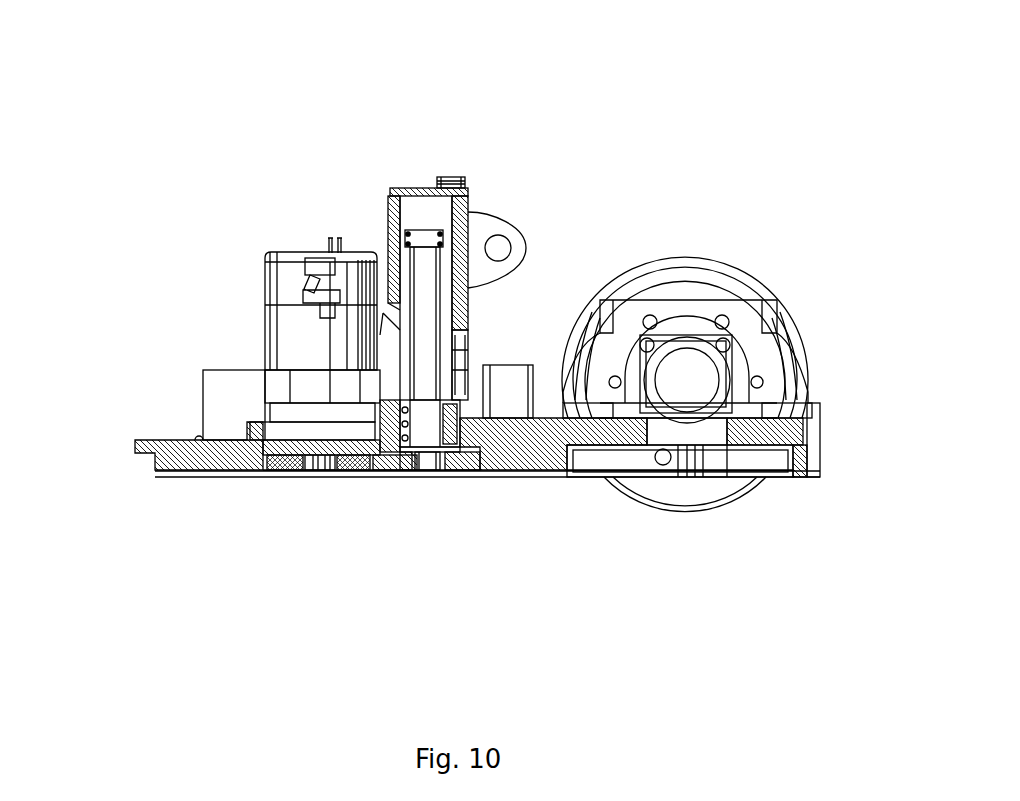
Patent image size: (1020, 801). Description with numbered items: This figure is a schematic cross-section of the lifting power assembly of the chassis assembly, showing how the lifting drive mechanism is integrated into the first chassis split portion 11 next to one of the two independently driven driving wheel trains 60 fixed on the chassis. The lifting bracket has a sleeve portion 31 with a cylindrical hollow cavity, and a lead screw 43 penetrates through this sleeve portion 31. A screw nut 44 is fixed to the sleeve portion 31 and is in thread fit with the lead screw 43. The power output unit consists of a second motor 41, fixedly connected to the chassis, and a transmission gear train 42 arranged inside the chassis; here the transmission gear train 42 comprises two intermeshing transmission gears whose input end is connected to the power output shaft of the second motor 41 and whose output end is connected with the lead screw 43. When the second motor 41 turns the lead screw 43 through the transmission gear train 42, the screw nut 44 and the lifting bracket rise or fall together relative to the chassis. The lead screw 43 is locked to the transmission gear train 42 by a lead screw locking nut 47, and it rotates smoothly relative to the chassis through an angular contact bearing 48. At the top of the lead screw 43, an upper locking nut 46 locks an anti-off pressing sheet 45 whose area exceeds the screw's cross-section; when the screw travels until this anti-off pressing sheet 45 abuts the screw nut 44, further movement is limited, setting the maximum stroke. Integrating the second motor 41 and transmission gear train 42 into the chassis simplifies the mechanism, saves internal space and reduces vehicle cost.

The first chassis split portion 11 is at (185, 455).
The sleeve portion 31 is at (406, 232).
The second motor 41 is at (317, 395).
The transmission gear train 42 is at (287, 464).
The lead screw 43 is at (425, 457).
The screw nut 44 is at (395, 265).
The anti-off pressing sheet 45 is at (466, 195).
The upper locking nut 46 is at (385, 194).
The lead screw locking nut 47 is at (445, 468).
The angular contact bearing 48 is at (485, 470).
The driving wheel train 60 is at (749, 318).